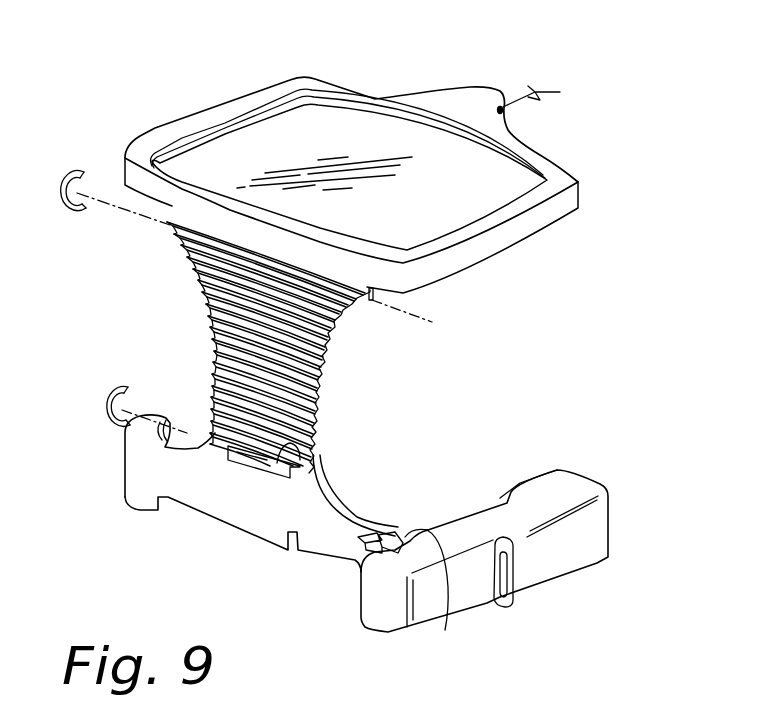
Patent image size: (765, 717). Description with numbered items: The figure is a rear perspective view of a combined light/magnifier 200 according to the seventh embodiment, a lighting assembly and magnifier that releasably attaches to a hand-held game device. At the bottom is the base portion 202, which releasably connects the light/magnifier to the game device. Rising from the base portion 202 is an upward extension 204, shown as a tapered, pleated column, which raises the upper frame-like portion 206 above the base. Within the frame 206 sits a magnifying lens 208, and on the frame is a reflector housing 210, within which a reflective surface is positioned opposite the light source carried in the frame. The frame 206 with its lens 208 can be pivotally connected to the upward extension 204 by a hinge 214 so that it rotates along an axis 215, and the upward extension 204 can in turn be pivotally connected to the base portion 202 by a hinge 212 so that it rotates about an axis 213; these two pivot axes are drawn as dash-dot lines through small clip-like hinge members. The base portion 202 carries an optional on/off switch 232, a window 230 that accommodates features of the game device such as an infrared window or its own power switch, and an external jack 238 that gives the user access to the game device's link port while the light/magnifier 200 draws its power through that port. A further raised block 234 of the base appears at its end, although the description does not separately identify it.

The combined light/magnifier 200 is at (628, 211).
The base portion 202 is at (215, 483).
The upward extension 204 is at (328, 358).
The frame 206 is at (200, 118).
The magnifying lens 208 is at (332, 123).
The reflector housing 210 is at (463, 95).
The hinge 212 is at (328, 452).
The axis 213 is at (97, 398).
The hinge 214 is at (367, 295).
The axis 215 is at (115, 206).
The window 230 is at (328, 560).
The on/off switch 232 is at (445, 630).
The raised end block 234 is at (570, 557).
The external jack 238 is at (503, 583).